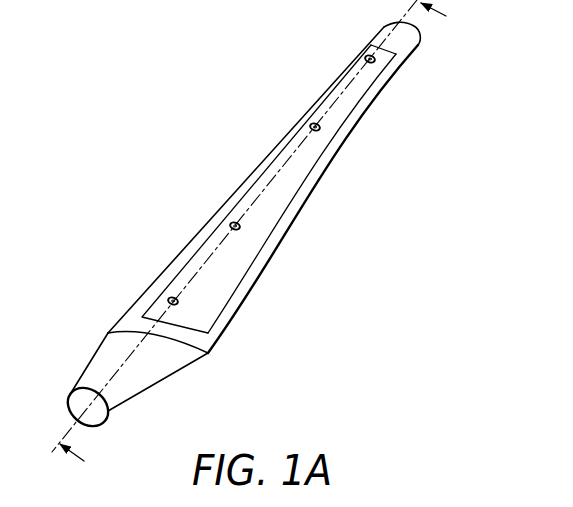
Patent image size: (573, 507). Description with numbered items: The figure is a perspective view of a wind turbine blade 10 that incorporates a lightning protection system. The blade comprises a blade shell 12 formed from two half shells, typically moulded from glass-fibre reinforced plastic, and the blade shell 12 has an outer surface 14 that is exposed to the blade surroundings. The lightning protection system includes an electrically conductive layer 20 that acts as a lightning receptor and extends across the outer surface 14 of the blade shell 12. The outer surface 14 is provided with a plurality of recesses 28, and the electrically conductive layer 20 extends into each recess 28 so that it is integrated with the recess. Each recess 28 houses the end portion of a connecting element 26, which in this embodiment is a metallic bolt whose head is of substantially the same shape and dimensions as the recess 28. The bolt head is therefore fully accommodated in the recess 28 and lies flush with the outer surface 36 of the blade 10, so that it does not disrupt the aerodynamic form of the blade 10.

The wind turbine blade 10 is at (256, 236).
The blade shell 12 is at (405, 46).
The outer surface 14 is at (330, 133).
The electrically conductive layer 20 is at (210, 320).
The connecting element 26 is at (178, 300).
The recess 28 is at (168, 299).
The outer surface of the blade 36 is at (160, 273).